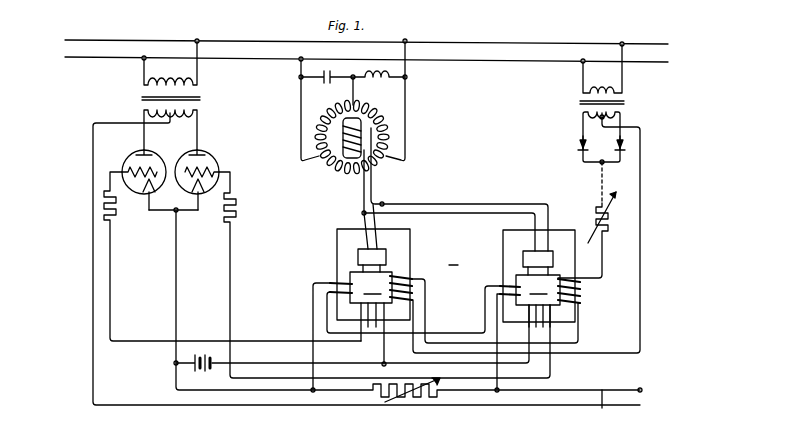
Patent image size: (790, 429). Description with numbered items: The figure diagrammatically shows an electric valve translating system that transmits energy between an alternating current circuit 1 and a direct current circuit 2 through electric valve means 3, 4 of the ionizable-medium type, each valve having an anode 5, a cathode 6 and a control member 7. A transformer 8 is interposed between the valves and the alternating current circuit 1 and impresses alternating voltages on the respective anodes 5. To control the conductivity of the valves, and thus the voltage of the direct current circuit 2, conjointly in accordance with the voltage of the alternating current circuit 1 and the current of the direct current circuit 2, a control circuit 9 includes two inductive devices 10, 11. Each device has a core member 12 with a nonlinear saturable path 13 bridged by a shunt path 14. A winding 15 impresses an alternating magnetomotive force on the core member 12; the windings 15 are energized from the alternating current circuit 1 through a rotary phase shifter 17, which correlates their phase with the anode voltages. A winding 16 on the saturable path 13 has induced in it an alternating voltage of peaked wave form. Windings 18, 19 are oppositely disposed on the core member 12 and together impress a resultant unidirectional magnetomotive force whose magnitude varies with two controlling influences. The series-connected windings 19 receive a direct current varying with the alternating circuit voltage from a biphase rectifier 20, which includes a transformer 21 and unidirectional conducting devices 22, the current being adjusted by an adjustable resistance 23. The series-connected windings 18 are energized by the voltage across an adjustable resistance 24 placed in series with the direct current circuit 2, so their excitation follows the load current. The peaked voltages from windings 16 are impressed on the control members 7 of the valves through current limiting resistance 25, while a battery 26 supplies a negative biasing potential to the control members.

The alternating current circuit 1 is at (97, 58).
The direct current circuit 2 is at (615, 394).
The electric valve means 3 is at (143, 172).
The electric valve means 4 is at (197, 178).
The anode 5 is at (151, 154).
The cathode 6 is at (141, 189).
The control member 7 is at (157, 166).
The transformer 8 is at (203, 99).
The control circuit 9 is at (453, 258).
The inductive device 10 is at (465, 251).
The inductive device 11 is at (538, 278).
The core member 12 is at (337, 240).
The nonlinear saturable path 13 is at (337, 319).
The shunt path 14 is at (372, 270).
The winding 15 is at (364, 233).
The winding 16 is at (368, 327).
The rotary phase shifter 17 is at (372, 112).
The winding 18 is at (318, 291).
The winding 19 is at (414, 292).
The biphase rectifier 20 is at (615, 135).
The transformer 21 is at (622, 101).
The unidirectional conducting devices 22 is at (617, 145).
The adjustable resistance 23 is at (610, 230).
The adjustable resistance 24 is at (437, 393).
The current limiting resistance 25 is at (113, 215).
The battery 26 is at (207, 370).